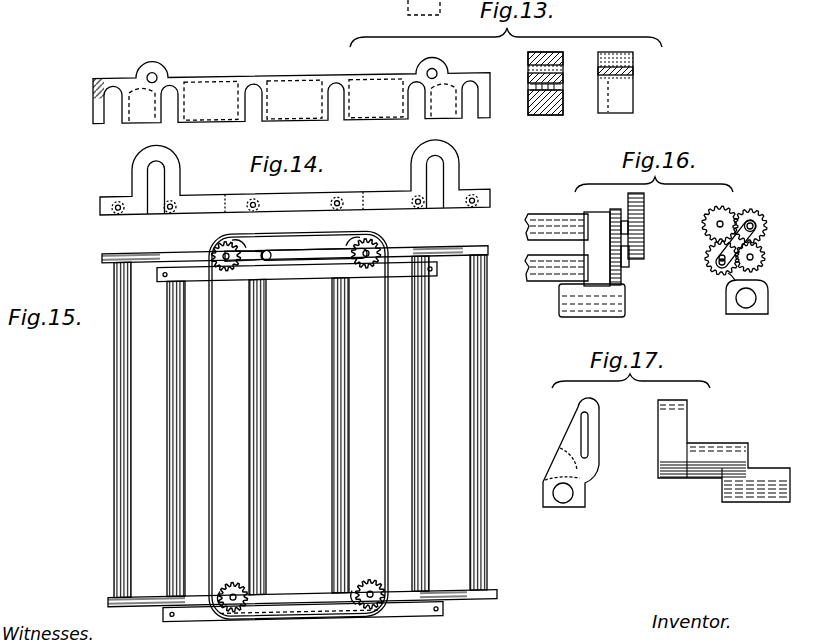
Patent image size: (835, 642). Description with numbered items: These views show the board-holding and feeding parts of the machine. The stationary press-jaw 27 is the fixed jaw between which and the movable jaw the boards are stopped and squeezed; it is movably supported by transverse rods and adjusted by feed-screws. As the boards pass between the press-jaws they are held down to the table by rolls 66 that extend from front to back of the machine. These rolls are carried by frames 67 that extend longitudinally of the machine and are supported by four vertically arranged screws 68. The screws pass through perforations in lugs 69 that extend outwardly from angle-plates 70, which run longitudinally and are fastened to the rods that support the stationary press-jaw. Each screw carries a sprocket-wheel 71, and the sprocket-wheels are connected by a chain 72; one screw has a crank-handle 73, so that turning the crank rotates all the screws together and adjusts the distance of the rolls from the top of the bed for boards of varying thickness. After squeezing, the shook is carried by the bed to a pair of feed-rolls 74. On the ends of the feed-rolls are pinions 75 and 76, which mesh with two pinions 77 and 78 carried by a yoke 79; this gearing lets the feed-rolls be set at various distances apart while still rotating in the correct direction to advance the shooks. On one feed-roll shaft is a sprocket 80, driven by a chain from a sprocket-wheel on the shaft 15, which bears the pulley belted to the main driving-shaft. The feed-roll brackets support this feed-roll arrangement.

In FIG. 13, the stationary press-jaw 27 is at (611, 105).
In FIG. 14, the rolls 66 is at (170, 215).
In FIG. 15, the rolls 66 is at (174, 440).
In FIG. 14, the frames 67 is at (216, 193).
In FIG. 15, the screws 68 is at (214, 252).
In FIG. 15, the lugs 69 is at (227, 270).
In FIG. 15, the angle-plates 70 is at (307, 279).
In FIG. 15, the sprocket-wheel 71 is at (236, 246).
In FIG. 15, the chain 72 is at (213, 398).
In FIG. 15, the crank-handle 73 is at (270, 252).
In FIG. 16, the feed-rolls 74 is at (545, 207).
In FIG. 16, the pinion 75 is at (614, 210).
In FIG. 16, the pinion 76 is at (622, 280).
In FIG. 16, the pinion 77 is at (758, 212).
In FIG. 16, the pinion 78 is at (768, 290).
In FIG. 16, the yoke 79 is at (645, 245).
In FIG. 16, the sprocket 80 is at (645, 200).
In FIG. 16, the shaft 15 is at (716, 208).